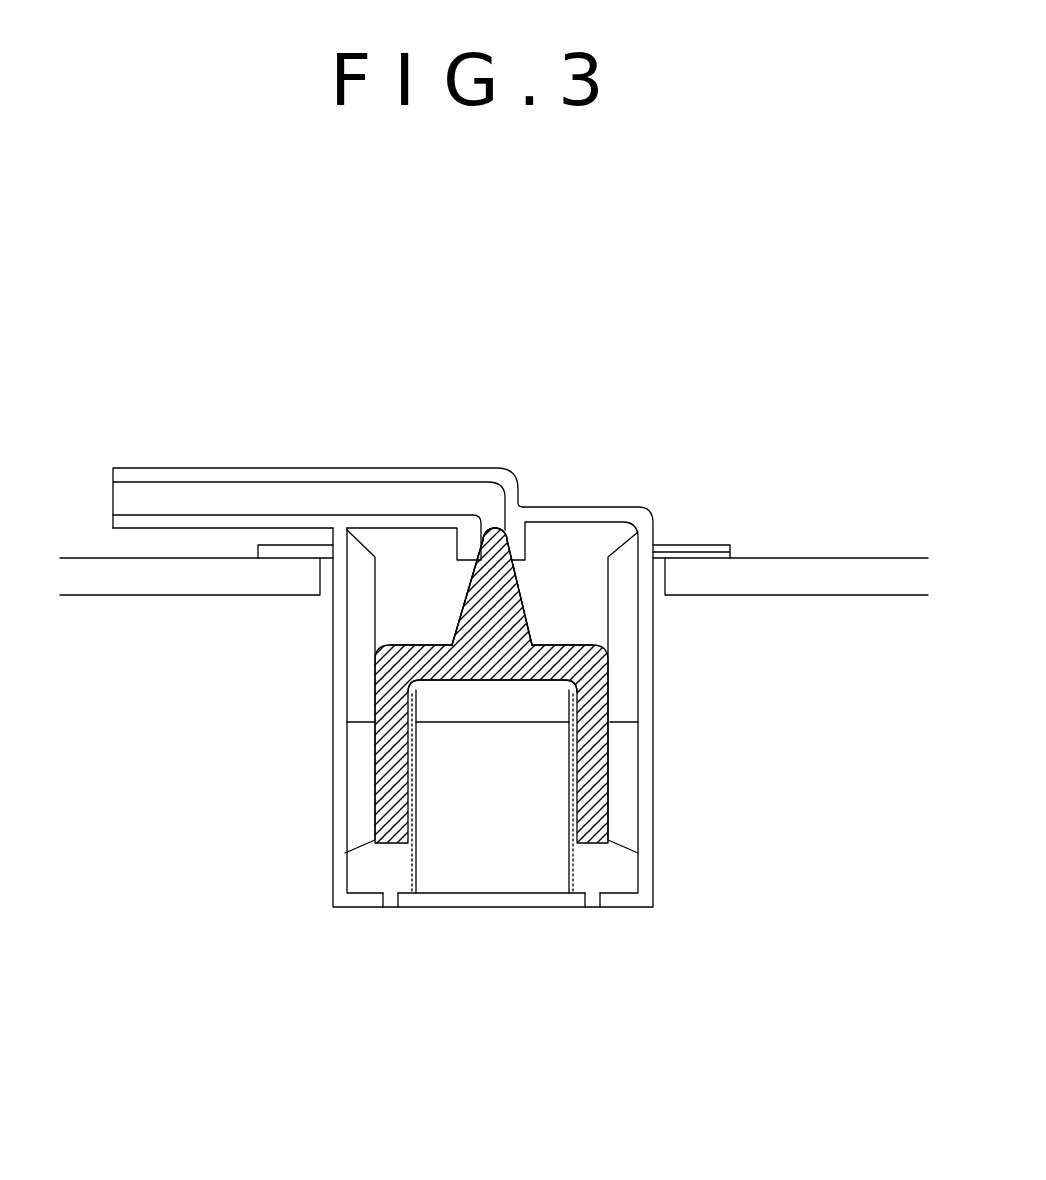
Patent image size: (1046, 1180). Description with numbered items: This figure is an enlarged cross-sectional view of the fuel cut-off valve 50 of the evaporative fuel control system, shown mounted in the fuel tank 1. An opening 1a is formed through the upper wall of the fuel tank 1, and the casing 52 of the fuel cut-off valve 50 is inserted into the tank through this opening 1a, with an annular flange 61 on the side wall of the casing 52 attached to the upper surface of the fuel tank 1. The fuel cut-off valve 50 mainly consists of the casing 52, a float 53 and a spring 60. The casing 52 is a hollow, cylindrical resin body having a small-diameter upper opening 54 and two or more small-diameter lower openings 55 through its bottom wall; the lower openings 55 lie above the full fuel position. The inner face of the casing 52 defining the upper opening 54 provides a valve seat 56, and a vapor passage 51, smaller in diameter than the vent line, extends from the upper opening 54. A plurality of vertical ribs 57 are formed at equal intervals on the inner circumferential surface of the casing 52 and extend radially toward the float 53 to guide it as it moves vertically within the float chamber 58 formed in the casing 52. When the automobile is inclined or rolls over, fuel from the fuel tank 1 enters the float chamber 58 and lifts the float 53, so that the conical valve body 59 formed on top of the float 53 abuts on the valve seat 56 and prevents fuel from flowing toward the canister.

The fuel tank 1 is at (857, 582).
The opening 1a is at (327, 596).
The fuel cut-off valve 50 is at (683, 496).
The vapor passage 51 is at (250, 468).
The casing 52 is at (340, 803).
The float 53 is at (610, 750).
The small-diameter upper opening 54 is at (492, 522).
The lower openings 55 is at (387, 908).
The valve seat 56 is at (508, 535).
The vertical ribs 57 is at (623, 680).
The float chamber 58 is at (442, 748).
The conical valve body 59 is at (517, 602).
The spring 60 is at (580, 807).
The annular flange 61 is at (703, 545).